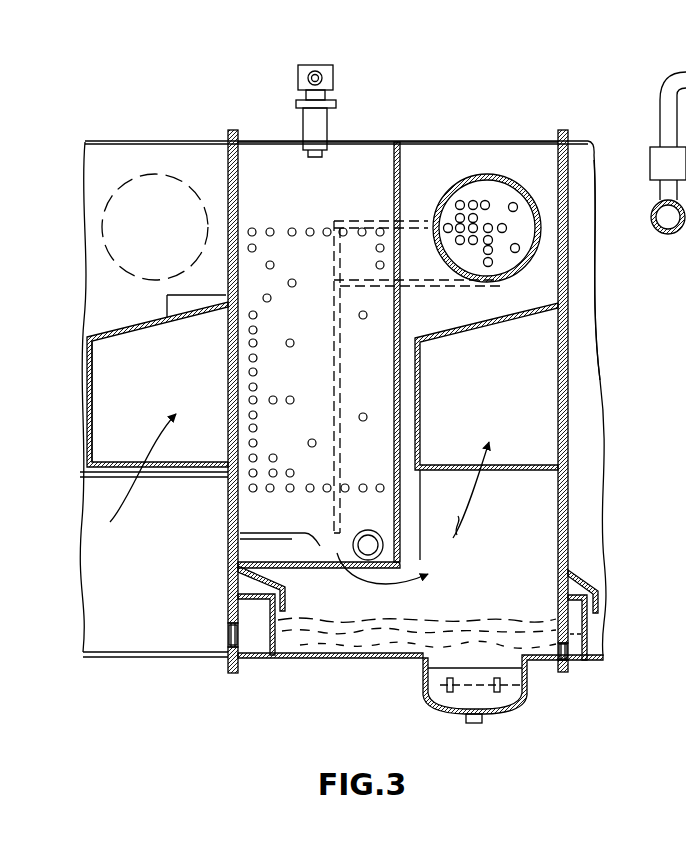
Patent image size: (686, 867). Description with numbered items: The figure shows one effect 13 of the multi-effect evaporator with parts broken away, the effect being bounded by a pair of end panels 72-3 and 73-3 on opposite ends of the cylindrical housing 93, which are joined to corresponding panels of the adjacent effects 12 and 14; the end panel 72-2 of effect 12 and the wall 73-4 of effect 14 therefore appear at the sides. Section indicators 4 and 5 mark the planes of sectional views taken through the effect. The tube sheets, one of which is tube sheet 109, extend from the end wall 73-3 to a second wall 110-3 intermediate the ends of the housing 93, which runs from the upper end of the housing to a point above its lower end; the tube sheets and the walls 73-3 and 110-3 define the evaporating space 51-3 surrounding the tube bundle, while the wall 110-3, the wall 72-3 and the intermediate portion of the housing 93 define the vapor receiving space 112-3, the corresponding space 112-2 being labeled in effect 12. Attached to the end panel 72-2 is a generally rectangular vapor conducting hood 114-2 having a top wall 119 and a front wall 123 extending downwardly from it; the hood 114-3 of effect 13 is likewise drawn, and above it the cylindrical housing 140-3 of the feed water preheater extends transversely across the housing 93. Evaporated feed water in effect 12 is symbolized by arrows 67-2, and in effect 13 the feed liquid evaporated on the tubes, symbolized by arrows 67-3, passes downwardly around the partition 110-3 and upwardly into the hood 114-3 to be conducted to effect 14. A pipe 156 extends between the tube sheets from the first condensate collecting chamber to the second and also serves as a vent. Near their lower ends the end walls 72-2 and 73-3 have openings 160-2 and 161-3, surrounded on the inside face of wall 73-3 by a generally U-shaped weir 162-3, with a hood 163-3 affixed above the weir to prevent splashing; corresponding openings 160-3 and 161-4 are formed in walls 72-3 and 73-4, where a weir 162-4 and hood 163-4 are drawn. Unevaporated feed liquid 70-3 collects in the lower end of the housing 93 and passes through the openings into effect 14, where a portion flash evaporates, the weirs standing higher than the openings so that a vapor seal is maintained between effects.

The effect 12 is at (126, 138).
The effect 13 is at (488, 135).
The effect 14 is at (597, 162).
The section line 4- 4 is at (385, 125).
The section line 5- 5 is at (250, 92).
The evaporating space 51-3 is at (347, 163).
The cylindrical housing 93 is at (444, 114).
The tube sheet 109 is at (668, 185).
The second wall 110-3 is at (401, 163).
The vapor conducting hood 114-2 is at (110, 478).
The vapor conducting hood 114-3 is at (444, 337).
The top wall 119 is at (180, 322).
The front wall 123 is at (92, 378).
The preheater housing 140-3 is at (512, 177).
The pipe 156 is at (385, 535).
The opening 160-2 is at (228, 637).
The opening 160-3 is at (560, 646).
The opening 161-3 is at (240, 638).
The opening 161-4 is at (587, 660).
The weir 162-3 is at (277, 632).
The weir 162-4 is at (588, 633).
The hood 163-3 is at (289, 592).
The chute 163-4 is at (598, 591).
The evaporated feed water 67-2 is at (155, 446).
The evaporated feed liquid 67-3 is at (400, 592).
The unevaporated feed liquid 70-3 is at (397, 640).
The end panel 72-2 is at (228, 505).
The end panel 72-3 is at (558, 493).
The end panel 73-3 is at (239, 185).
The wall 73-4 is at (570, 420).
The chamber 112-2 is at (148, 605).
The vapor receiving space 112-3 is at (545, 585).